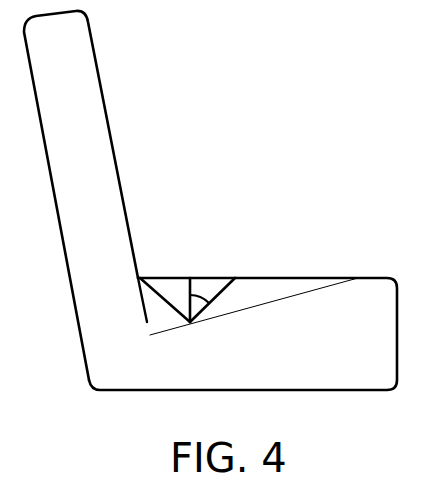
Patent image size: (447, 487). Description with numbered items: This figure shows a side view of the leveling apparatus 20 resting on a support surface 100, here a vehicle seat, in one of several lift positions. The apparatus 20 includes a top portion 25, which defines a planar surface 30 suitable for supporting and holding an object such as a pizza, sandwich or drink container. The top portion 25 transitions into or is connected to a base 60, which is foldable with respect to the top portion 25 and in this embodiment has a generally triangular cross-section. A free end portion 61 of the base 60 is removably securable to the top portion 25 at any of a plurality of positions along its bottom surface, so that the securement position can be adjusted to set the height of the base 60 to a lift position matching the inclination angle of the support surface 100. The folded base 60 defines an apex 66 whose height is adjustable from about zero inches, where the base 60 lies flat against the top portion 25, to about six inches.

The apparatus 20 is at (210, 200).
The top portion 25 is at (285, 278).
The planar surface 30 is at (158, 277).
The base 60 is at (156, 303).
The free end portion 61 is at (243, 279).
The apex 66 is at (205, 312).
The support surface 100 is at (286, 291).